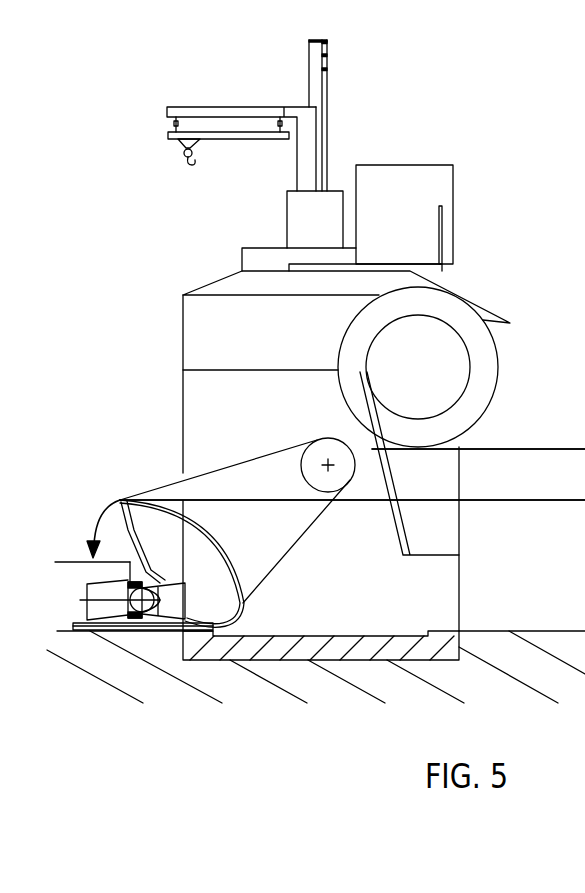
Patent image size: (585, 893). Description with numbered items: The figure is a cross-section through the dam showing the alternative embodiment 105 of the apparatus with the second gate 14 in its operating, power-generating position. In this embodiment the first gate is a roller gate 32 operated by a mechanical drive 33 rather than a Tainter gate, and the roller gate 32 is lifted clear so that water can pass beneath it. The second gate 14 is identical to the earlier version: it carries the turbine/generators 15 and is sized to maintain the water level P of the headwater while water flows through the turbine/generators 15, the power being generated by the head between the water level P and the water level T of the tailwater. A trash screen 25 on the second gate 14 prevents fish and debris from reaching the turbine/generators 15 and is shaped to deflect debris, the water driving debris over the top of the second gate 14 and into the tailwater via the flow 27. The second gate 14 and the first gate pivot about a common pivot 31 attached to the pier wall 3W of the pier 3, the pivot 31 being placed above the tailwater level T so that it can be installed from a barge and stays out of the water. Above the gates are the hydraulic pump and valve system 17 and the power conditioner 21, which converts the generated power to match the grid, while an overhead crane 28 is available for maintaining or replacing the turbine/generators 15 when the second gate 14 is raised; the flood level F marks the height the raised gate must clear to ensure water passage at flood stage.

The alternative embodiment 105 is at (445, 100).
The overhead crane 28 is at (189, 161).
The power conditioner 21 is at (329, 234).
The hydraulic pump and valve system 17 is at (415, 229).
The mechanical drive 33 is at (285, 347).
The roller gate 32 is at (433, 382).
The pier wall 3W is at (238, 412).
The pier 3 is at (208, 444).
The common pivot 31 is at (328, 458).
The second gate 14 is at (120, 500).
The flow 27 is at (96, 519).
The trash screen 25 is at (210, 541).
The turbine/generators 15 is at (137, 621).
The flood level F is at (523, 443).
The water level P is at (212, 494).
The water level of tailwater T is at (56, 556).